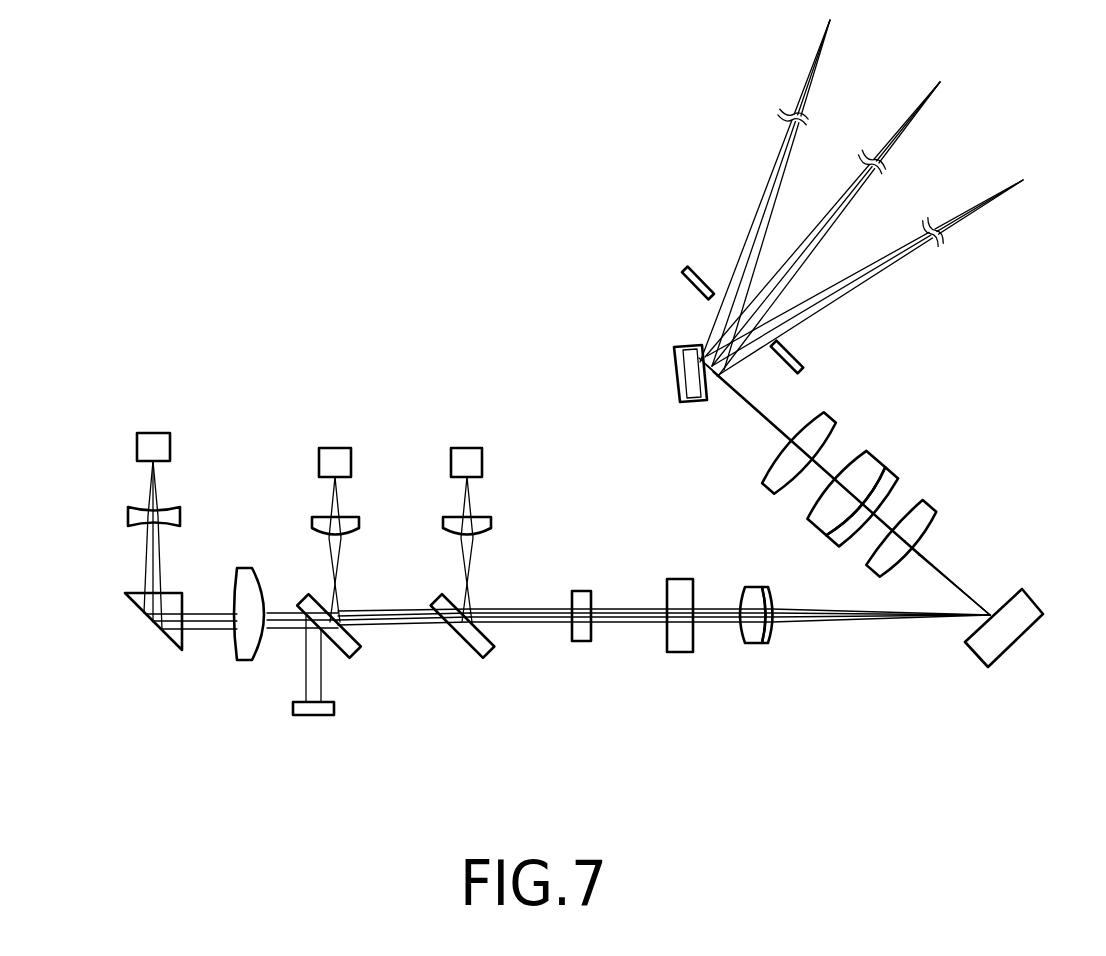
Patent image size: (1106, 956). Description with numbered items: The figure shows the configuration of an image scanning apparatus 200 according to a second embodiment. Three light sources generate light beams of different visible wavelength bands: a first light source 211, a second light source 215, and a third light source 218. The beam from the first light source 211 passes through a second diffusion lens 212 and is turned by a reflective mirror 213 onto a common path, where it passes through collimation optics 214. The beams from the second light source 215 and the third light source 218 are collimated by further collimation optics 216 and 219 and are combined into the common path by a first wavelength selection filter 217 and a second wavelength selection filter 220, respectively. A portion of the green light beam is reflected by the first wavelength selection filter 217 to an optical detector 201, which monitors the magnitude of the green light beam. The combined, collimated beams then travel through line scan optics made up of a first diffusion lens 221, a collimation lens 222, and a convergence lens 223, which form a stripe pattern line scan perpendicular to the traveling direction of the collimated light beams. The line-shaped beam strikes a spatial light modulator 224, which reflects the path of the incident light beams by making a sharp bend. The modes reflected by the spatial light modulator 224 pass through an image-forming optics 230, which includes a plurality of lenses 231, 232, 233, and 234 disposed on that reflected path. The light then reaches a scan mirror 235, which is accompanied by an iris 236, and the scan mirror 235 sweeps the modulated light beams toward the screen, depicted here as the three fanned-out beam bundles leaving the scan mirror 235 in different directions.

The image scanning apparatus 200 is at (418, 249).
The optical detector 201 is at (314, 715).
The first light source 211 is at (137, 447).
The second diffusion lens 212 is at (128, 516).
The reflective mirror 213 is at (125, 596).
The collimation optics 214 is at (247, 660).
The second light source 215 is at (351, 461).
The collimation optics 216 is at (359, 526).
The first wavelength selection filter 217 is at (352, 651).
The third light source 218 is at (482, 461).
The collimation optics 219 is at (491, 526).
The second wavelength selection filter 220 is at (486, 651).
The first diffusion lens 221 is at (581, 641).
The collimation lens 222 is at (680, 652).
The convergence lens 223 is at (757, 643).
The spatial light modulator 224 is at (1014, 639).
The image-forming optics 230 is at (887, 474).
The lens 231 is at (934, 524).
The lens 232 is at (897, 473).
The lens 233 is at (862, 447).
The lens 234 is at (820, 414).
The scan mirror 235 is at (676, 376).
The iris 236 is at (684, 270).